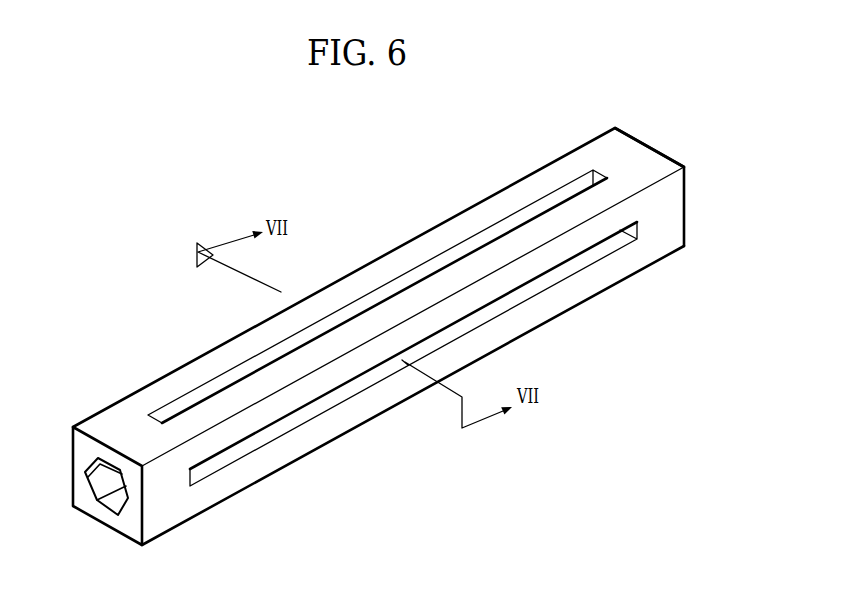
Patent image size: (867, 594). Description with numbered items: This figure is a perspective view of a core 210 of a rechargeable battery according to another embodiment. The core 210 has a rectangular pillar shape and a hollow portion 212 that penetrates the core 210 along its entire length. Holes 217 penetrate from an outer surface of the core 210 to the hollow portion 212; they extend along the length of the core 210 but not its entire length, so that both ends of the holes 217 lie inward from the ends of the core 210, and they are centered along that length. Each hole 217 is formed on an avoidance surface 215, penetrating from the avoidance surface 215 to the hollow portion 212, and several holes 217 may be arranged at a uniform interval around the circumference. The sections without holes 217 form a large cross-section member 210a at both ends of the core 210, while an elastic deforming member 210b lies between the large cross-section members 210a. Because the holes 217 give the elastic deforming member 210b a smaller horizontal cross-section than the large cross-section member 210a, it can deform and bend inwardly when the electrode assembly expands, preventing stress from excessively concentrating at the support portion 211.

The core 210 is at (410, 198).
The large cross-section member 210a is at (152, 372).
The elastic deforming member 210b is at (554, 151).
The support portion 211 is at (628, 198).
The hollow portion 212 is at (107, 503).
The avoidance surface 215 is at (145, 450).
The holes 217 is at (293, 352).